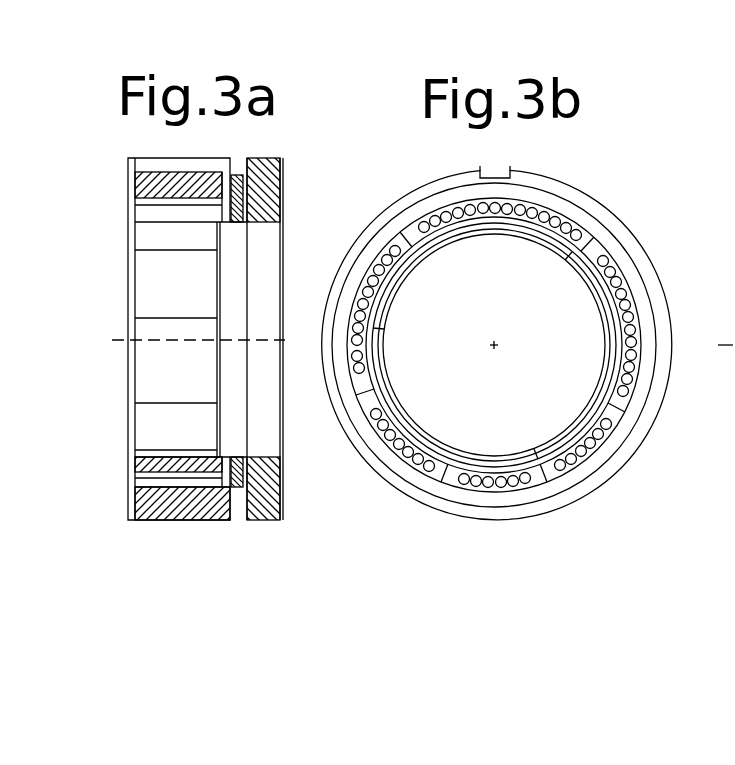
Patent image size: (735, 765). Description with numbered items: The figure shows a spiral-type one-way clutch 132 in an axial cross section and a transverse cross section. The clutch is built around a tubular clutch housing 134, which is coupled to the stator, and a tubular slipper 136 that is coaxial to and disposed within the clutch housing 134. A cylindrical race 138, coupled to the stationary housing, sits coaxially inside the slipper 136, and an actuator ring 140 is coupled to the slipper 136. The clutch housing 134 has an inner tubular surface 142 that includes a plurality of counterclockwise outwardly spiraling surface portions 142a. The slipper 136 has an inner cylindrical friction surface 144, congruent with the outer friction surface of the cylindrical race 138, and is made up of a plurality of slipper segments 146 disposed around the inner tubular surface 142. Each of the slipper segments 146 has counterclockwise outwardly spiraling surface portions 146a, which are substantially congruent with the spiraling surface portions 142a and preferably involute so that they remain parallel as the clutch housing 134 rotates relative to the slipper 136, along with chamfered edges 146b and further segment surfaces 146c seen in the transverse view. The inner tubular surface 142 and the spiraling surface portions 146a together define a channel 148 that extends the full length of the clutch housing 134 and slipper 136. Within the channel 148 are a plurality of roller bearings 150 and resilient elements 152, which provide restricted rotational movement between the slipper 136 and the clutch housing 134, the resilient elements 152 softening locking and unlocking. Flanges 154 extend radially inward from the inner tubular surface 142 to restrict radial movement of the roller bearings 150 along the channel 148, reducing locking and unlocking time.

In FIG. 3a, the spiral-type one-way clutch 132 is at (135, 564).
In FIG. 3a, the clutch housing 134 is at (152, 180).
In FIG. 3b, the clutch housing 134 is at (542, 195).
In FIG. 3a, the slipper 136 is at (153, 213).
In FIG. 3a, the cylindrical race 138 is at (155, 235).
In FIG. 3a, the actuator ring 140 is at (243, 460).
In FIG. 3a, the inner tubular surface 142 is at (135, 473).
In FIG. 3b, the counterclockwise outwardly spiraling surface portions 142a is at (618, 257).
In FIG. 3a, the inner cylindrical friction surface 144 is at (135, 450).
In FIG. 3b, the slipper segments 146 is at (395, 393).
In FIG. 3b, the counterclockwise outwardly spiraling surface portions 146a is at (458, 227).
In FIG. 3a, the chamfered edges 146b is at (278, 176).
In FIG. 3b, the chamfered edges 146b is at (540, 230).
In FIG. 3b, the race segment c 146c is at (598, 277).
In FIG. 3a, the channel 148 is at (140, 195).
In FIG. 3b, the roller bearings 150 is at (640, 382).
In FIG. 3b, the resilient elements 152 is at (627, 408).
In FIG. 3b, the flanges 154 is at (508, 202).